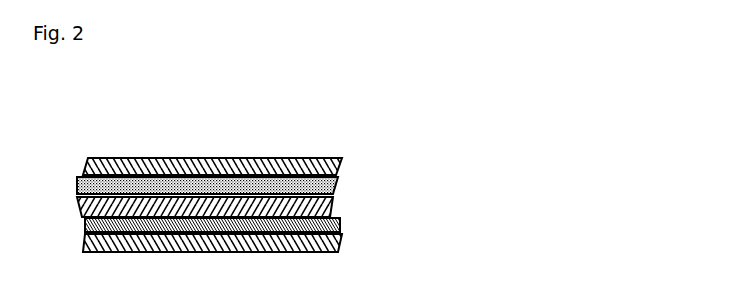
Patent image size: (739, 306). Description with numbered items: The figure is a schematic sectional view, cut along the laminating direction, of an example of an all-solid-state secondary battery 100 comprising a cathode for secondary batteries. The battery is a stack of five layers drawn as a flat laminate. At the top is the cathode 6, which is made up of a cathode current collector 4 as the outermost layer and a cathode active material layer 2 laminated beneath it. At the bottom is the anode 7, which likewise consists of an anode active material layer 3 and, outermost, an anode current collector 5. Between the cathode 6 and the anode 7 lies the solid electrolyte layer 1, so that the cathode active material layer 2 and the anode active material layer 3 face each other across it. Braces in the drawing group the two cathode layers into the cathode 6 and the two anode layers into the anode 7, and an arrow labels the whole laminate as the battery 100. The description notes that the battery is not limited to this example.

The all-solid-state secondary battery 100 is at (318, 111).
The solid electrolyte layer 1 is at (330, 207).
The cathode active material layer 2 is at (333, 192).
The anode active material layer 3 is at (340, 230).
The cathode current collector 4 is at (336, 173).
The anode current collector 5 is at (340, 248).
The cathode 6 is at (402, 158).
The anode 7 is at (402, 218).